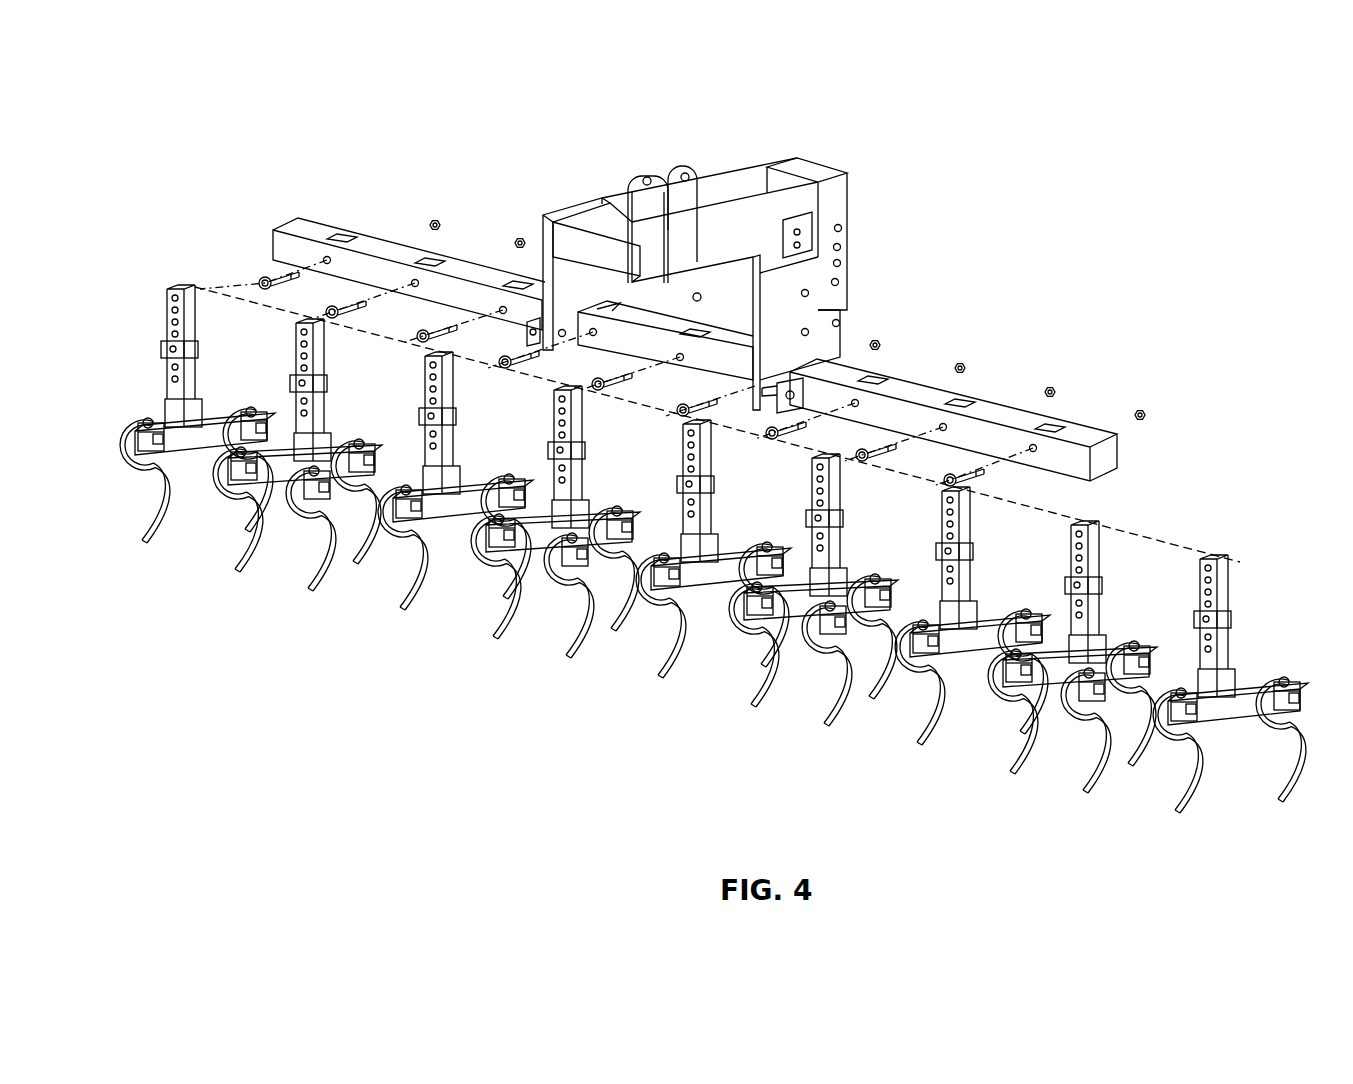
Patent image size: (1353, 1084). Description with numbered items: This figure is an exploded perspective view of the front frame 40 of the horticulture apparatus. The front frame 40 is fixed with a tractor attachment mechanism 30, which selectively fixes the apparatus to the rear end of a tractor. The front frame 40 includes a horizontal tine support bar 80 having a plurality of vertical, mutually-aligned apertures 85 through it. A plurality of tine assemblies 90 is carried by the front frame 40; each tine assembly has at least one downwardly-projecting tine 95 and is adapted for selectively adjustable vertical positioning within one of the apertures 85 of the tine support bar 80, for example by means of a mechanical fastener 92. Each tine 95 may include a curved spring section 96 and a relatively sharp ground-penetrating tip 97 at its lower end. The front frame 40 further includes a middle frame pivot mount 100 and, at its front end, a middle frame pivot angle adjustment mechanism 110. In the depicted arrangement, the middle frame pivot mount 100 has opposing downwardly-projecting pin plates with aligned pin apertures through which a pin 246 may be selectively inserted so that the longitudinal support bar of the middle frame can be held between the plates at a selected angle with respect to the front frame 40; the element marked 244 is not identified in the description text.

The tractor attachment mechanism 30 is at (666, 168).
The front frame 40 is at (760, 92).
The horizontal tine support bar 80 is at (465, 270).
The apertures 85 is at (342, 236).
The tine assemblies 90 is at (1135, 510).
The mechanical fastener 92 is at (1050, 388).
The tine 95 is at (803, 720).
The curved spring section 96 is at (1122, 665).
The ground-penetrating tip 97 is at (690, 690).
The middle frame pivot mount 100 is at (820, 310).
The middle frame pivot angle adjustment mechanism 110 is at (846, 186).
The adjustment holes 244 is at (846, 262).
The pin 246 is at (846, 230).